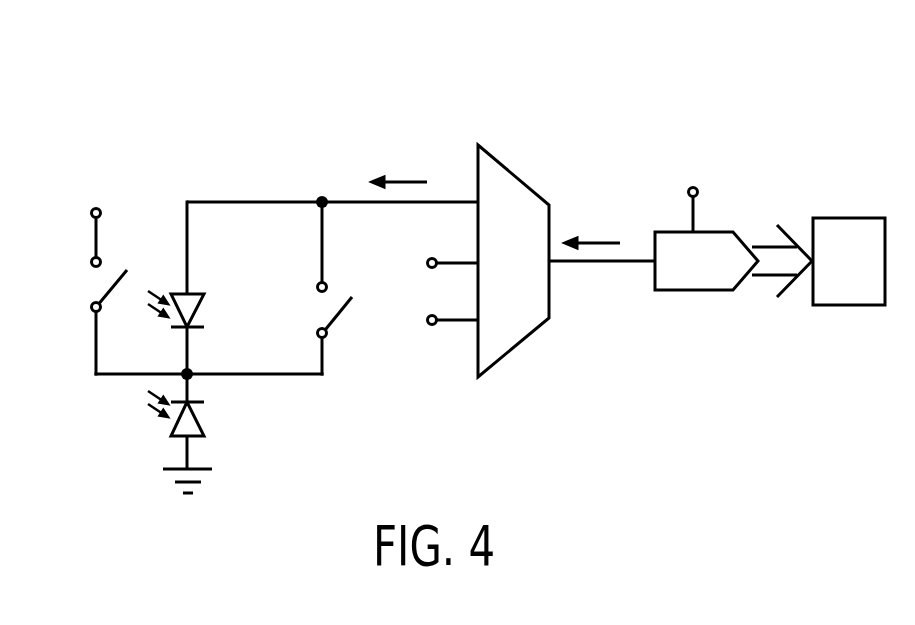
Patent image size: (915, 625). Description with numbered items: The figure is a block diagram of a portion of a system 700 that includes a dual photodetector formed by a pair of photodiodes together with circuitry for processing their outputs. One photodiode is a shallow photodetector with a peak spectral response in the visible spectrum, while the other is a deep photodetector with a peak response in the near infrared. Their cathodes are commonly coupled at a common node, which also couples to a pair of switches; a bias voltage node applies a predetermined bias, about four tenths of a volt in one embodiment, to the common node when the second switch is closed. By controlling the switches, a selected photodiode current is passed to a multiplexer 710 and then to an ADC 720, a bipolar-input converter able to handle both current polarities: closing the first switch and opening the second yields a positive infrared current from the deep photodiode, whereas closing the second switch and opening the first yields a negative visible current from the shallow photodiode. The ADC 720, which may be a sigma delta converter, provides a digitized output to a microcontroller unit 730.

The system 700 is at (96, 44).
The multiplexer 710 is at (512, 347).
The ADC 720 is at (693, 291).
The microcontroller unit 730 is at (847, 306).